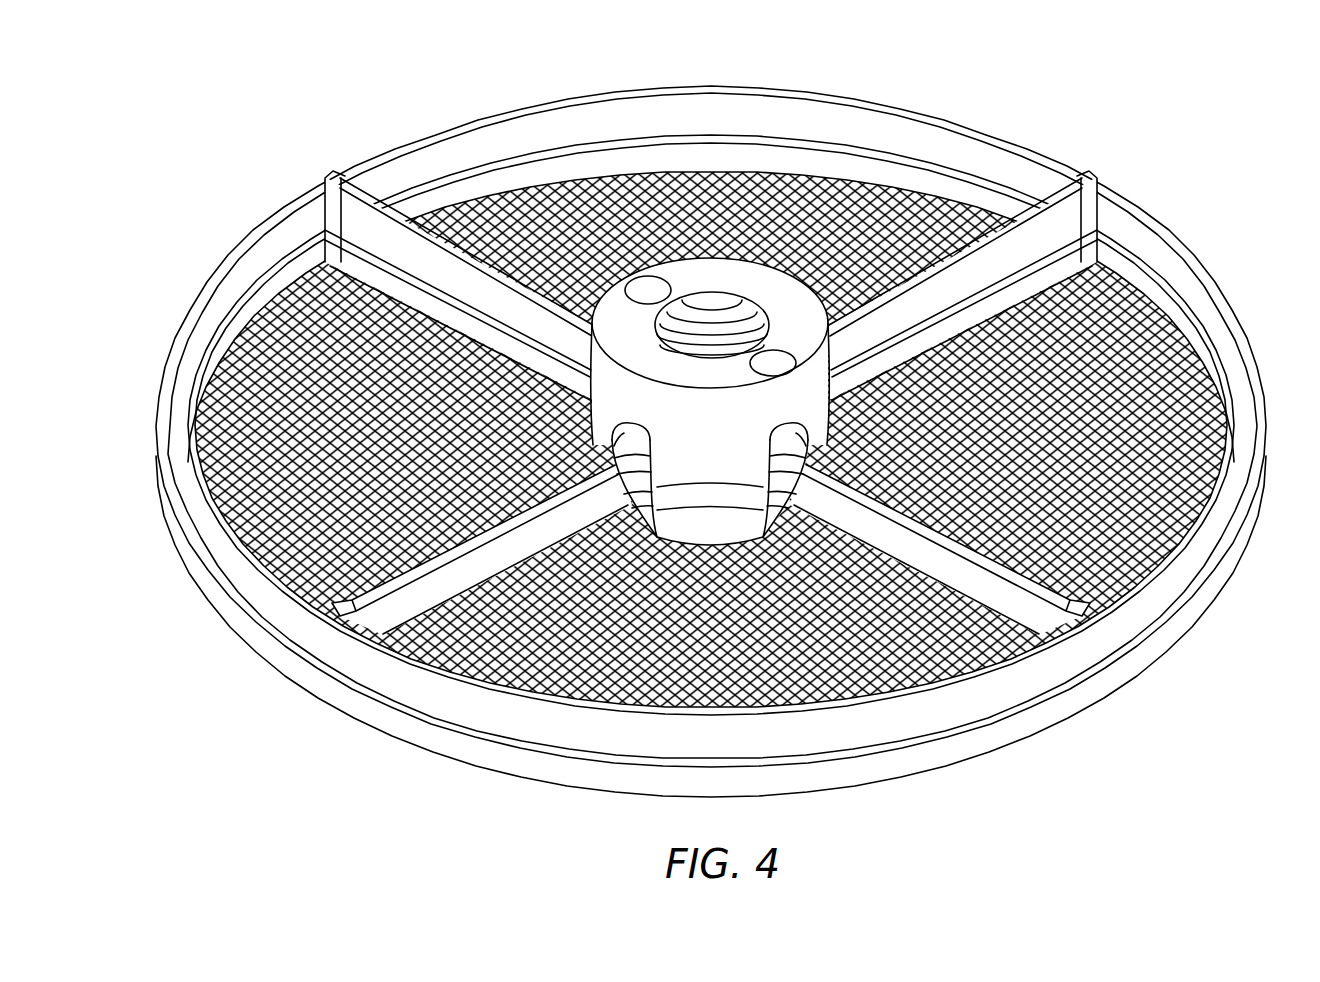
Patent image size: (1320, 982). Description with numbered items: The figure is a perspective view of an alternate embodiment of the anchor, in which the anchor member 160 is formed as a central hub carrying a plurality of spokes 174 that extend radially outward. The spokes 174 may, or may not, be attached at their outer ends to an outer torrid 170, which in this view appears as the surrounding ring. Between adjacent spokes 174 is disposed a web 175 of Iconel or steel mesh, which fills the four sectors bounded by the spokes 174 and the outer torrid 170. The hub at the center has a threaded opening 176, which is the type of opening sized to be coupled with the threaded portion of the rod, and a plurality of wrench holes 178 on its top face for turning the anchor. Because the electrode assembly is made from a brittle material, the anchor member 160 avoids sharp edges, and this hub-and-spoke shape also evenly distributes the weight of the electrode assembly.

The anchor member 160 is at (734, 417).
The outer torrid 170 is at (786, 91).
The spokes 174 is at (1060, 211).
The web 175 is at (1232, 405).
The threaded opening 176 is at (733, 350).
The wrench holes 178 is at (648, 290).